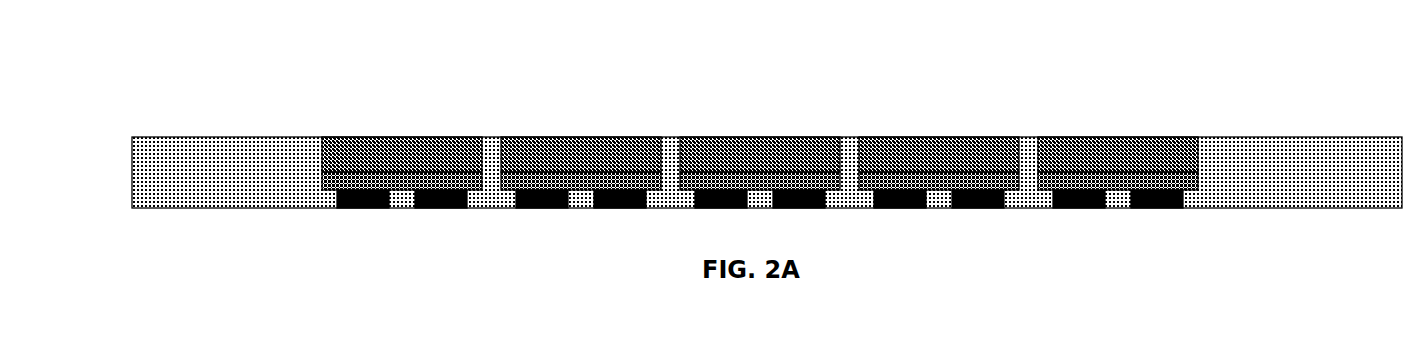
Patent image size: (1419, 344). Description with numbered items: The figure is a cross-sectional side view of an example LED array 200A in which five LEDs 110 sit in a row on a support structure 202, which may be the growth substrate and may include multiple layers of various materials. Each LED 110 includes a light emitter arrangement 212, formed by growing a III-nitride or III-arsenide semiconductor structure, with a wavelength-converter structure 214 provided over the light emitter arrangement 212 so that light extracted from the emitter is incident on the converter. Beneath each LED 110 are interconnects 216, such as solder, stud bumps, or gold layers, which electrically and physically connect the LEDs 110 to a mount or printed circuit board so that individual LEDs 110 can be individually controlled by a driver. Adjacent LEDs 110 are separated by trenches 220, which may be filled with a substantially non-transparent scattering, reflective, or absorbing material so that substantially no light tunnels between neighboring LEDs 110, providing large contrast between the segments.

The LED array 200A is at (321, 70).
The support structure 202 is at (1330, 149).
The LED 110 is at (810, 177).
The wavelength-converter structure 214 is at (1201, 155).
The light emitter arrangement 212 is at (1201, 180).
The interconnects 216 is at (1152, 211).
The trenches 220 is at (493, 146).